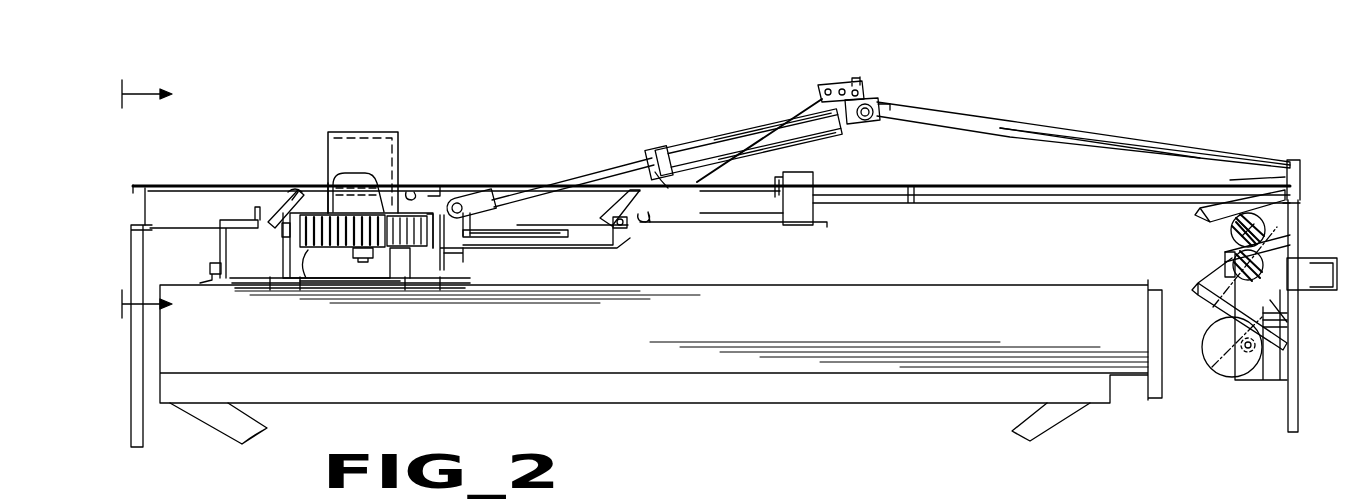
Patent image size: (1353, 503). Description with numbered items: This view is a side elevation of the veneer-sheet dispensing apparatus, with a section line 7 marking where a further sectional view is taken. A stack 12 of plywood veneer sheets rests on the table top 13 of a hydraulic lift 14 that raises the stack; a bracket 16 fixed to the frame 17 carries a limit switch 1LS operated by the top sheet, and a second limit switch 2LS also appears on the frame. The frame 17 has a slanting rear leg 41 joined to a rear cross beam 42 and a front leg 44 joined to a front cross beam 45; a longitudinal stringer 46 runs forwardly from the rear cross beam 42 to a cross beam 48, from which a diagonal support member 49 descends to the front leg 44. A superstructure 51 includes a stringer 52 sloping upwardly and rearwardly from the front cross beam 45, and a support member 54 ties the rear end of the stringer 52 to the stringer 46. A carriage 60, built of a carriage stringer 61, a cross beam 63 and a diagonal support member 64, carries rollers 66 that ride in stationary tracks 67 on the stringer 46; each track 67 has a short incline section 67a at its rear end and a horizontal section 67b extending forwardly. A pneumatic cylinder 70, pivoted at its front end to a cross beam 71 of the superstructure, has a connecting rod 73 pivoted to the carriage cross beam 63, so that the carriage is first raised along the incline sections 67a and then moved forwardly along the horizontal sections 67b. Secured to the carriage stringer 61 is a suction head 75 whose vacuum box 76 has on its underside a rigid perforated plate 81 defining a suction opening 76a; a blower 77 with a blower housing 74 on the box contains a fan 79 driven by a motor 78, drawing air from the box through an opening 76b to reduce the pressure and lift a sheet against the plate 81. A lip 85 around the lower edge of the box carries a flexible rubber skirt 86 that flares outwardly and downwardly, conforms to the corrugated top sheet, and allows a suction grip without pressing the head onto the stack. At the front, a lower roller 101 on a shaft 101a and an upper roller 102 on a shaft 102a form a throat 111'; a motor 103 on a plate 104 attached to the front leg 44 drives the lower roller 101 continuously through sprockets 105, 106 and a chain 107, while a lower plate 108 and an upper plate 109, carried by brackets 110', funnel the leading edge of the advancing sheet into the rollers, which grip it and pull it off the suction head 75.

The section line 7— 7 is at (156, 199).
The stack 12 is at (777, 328).
The table top 13 is at (742, 362).
The hydraulic lift 14 is at (1084, 406).
The bracket 16 is at (220, 248).
The frame 17 is at (1018, 184).
The rear leg 41 is at (143, 435).
The rear cross beam 42 is at (137, 186).
The front leg 44 is at (1288, 426).
The front cross beam 45 is at (1290, 160).
The longitudinal stringer 46 is at (162, 196).
The cross beam 48 is at (815, 217).
The diagonal support member 49 is at (932, 190).
The superstructure 51 is at (938, 100).
The superstructure stringer 52 is at (990, 122).
The support member 54 is at (808, 108).
The carriage 60 is at (515, 218).
The carriage stringer 61 is at (577, 242).
The carriage cross beam 63 is at (465, 250).
The diagonal support member 64 is at (535, 233).
The roller 66 is at (280, 232).
The track 67 is at (440, 190).
The incline section 67a is at (296, 196).
The horizontal section 67b is at (410, 192).
The pneumatic cylinder 70 is at (700, 142).
The cross beam 71 is at (880, 100).
The connecting rod 73 is at (645, 170).
The blower housing 74 is at (447, 262).
The suction head 75 is at (462, 285).
The vacuum box 76 is at (305, 252).
The suction opening 76a is at (307, 290).
The opening 76b is at (312, 280).
The blower 77 is at (332, 125).
The motor 78 is at (345, 178).
The fan 79 is at (283, 215).
The perforated plate 81 is at (360, 262).
The lip 85 is at (300, 292).
The skirt 86 is at (265, 292).
The limit switch 1LS is at (210, 274).
The limit switch 2LS is at (795, 176).
The lower roller 101 is at (1265, 262).
The shaft 101a is at (1222, 266).
The upper roller 102 is at (1262, 226).
The shaft 102a is at (1208, 218).
The motor 103 is at (1228, 374).
The plate 104 is at (1287, 386).
The sprocket 105 is at (1215, 367).
The sprocket 106 is at (1225, 300).
The chain 107 is at (1290, 314).
The lower plate 108 is at (1200, 281).
The upper plate 109 is at (1208, 224).
The bracket 110' is at (1263, 269).
The throat 111' is at (1296, 232).